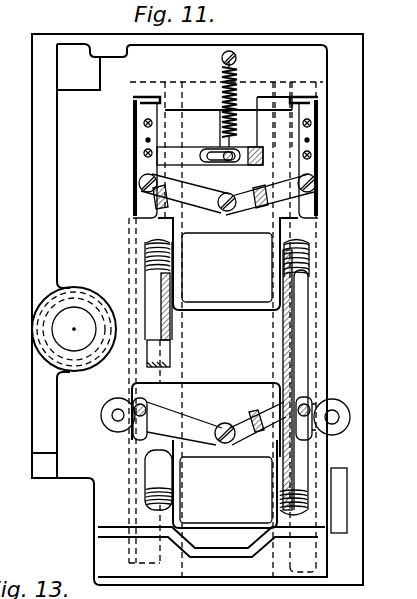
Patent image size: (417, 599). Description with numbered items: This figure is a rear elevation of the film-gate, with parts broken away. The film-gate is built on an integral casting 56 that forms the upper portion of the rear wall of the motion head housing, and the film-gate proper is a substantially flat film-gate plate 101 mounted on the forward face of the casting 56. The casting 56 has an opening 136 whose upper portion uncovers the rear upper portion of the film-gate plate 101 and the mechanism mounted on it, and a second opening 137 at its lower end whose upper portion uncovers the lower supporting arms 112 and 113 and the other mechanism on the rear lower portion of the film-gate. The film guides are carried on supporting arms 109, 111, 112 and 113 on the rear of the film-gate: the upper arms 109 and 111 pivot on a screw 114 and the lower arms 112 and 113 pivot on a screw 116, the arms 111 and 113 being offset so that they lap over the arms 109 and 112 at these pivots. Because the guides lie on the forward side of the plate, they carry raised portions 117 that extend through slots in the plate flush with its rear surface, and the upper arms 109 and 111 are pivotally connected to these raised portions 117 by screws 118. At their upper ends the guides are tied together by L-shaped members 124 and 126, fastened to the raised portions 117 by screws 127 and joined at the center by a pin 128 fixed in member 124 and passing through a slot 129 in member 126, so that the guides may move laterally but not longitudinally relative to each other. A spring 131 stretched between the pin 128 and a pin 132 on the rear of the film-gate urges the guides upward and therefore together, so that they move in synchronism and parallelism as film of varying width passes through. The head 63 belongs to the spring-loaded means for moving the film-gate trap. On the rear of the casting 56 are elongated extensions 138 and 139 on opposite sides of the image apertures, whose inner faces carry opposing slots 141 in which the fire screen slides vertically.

The casting 56 is at (66, 33).
The head 63 is at (75, 328).
The film-gate plate 101 is at (247, 450).
The supporting arm 109 is at (188, 202).
The supporting arm 111 is at (270, 202).
The supporting arm 112 is at (189, 420).
The supporting arm 113 is at (247, 424).
The screw 114 is at (228, 212).
The screw 116 is at (225, 423).
The raised portions 117 is at (146, 105).
The screws 118 is at (140, 186).
The L-shaped member 124 is at (187, 146).
The L-shaped member 126 is at (243, 128).
The screws 127 is at (146, 154).
The pin 128 is at (236, 135).
The slot 129 is at (218, 166).
The spring 131 is at (234, 97).
The pin 132 is at (222, 58).
The opening 136 is at (168, 271).
The opening 137 is at (172, 450).
The elongated extension 138 is at (153, 336).
The elongated extension 139 is at (296, 317).
The slots 141 is at (308, 259).